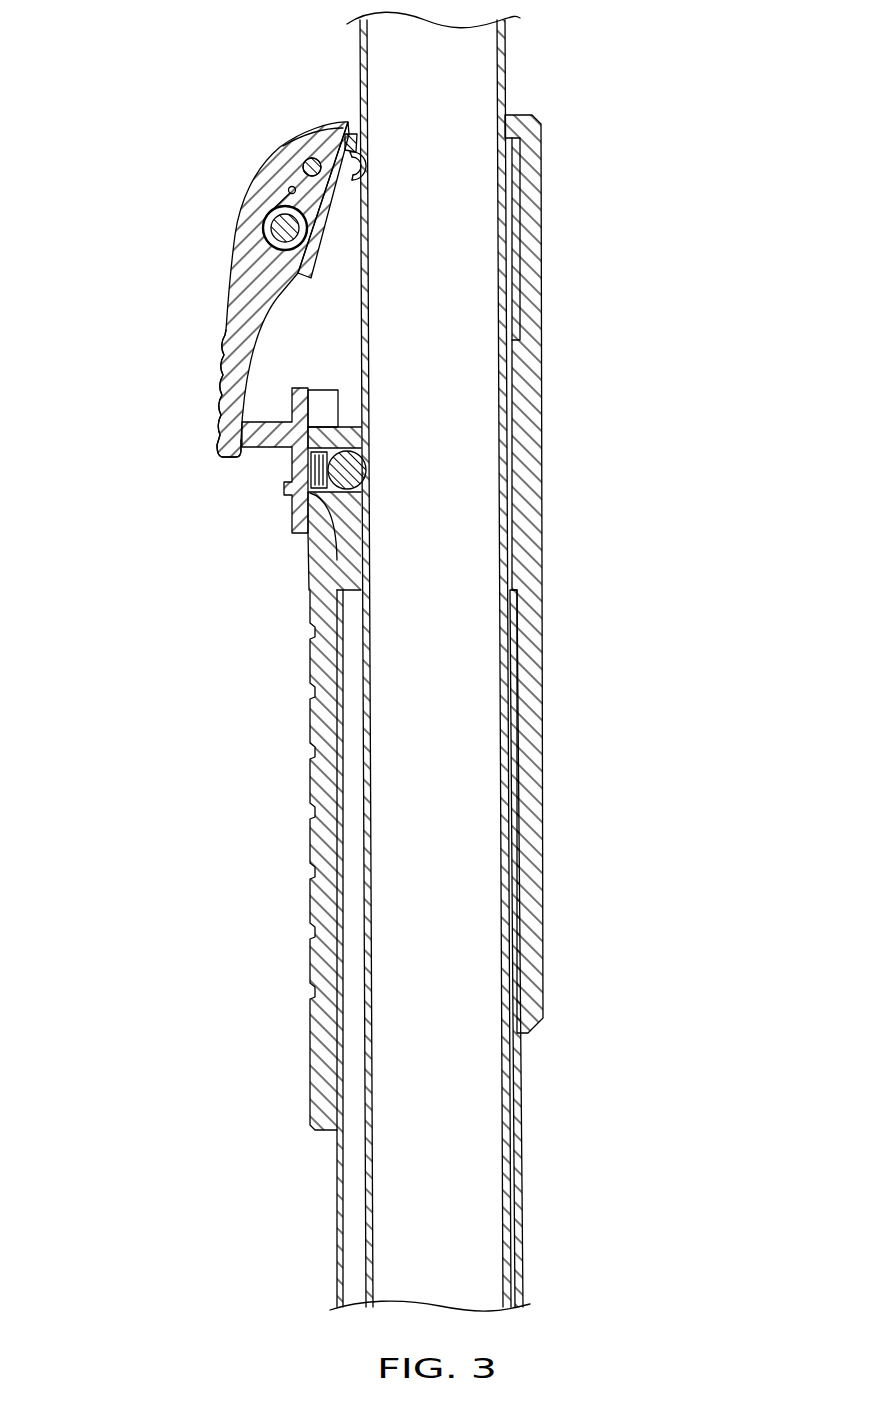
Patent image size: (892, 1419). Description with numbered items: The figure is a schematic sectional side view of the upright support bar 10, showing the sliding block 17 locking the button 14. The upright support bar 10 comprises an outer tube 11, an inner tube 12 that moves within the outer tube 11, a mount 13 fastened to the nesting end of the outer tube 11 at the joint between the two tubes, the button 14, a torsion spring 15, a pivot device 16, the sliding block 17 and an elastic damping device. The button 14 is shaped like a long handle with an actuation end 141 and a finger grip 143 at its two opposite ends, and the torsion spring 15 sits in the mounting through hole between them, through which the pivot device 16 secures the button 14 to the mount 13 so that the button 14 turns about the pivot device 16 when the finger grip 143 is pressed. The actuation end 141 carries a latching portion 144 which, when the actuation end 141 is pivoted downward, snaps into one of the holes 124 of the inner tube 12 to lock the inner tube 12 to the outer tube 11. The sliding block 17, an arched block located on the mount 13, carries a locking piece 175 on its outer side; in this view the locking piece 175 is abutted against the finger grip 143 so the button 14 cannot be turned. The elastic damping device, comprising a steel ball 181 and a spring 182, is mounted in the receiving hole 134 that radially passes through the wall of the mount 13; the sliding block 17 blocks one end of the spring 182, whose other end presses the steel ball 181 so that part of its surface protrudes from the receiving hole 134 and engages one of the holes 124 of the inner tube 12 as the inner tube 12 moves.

The upright support bar 10 is at (708, 291).
The outer tube 11 is at (338, 1255).
The inner tube 12 is at (505, 41).
The mount 13 is at (318, 905).
The button 14 is at (214, 255).
The torsion spring 15 is at (267, 210).
The pivot device 16 is at (272, 228).
The sliding block 17 is at (279, 525).
The hole 124 is at (366, 182).
The receiving hole 134 is at (318, 563).
The actuation end 141 is at (335, 118).
The finger grip 143 is at (216, 402).
The latching portion 144 is at (368, 164).
The locking piece 175 is at (258, 447).
The steel ball 181 is at (352, 427).
The spring 182 is at (313, 470).